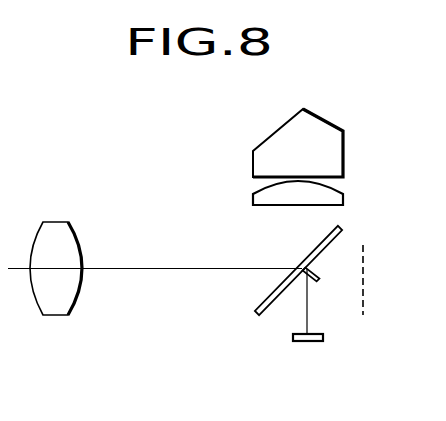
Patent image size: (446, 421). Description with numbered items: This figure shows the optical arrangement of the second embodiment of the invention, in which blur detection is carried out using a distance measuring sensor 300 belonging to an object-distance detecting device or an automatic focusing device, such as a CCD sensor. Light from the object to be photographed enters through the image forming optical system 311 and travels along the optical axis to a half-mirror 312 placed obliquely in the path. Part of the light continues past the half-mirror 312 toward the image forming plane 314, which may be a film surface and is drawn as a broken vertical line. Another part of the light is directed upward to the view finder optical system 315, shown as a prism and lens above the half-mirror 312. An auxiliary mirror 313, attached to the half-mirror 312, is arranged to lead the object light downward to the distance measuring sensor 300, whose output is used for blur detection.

The distance measuring sensor 300 is at (307, 342).
The image forming optical system 311 is at (58, 222).
The half-mirror 312 is at (268, 297).
The auxiliary mirror 313 is at (321, 276).
The image forming plane 314 is at (363, 278).
The view finder optical system 315 is at (331, 124).